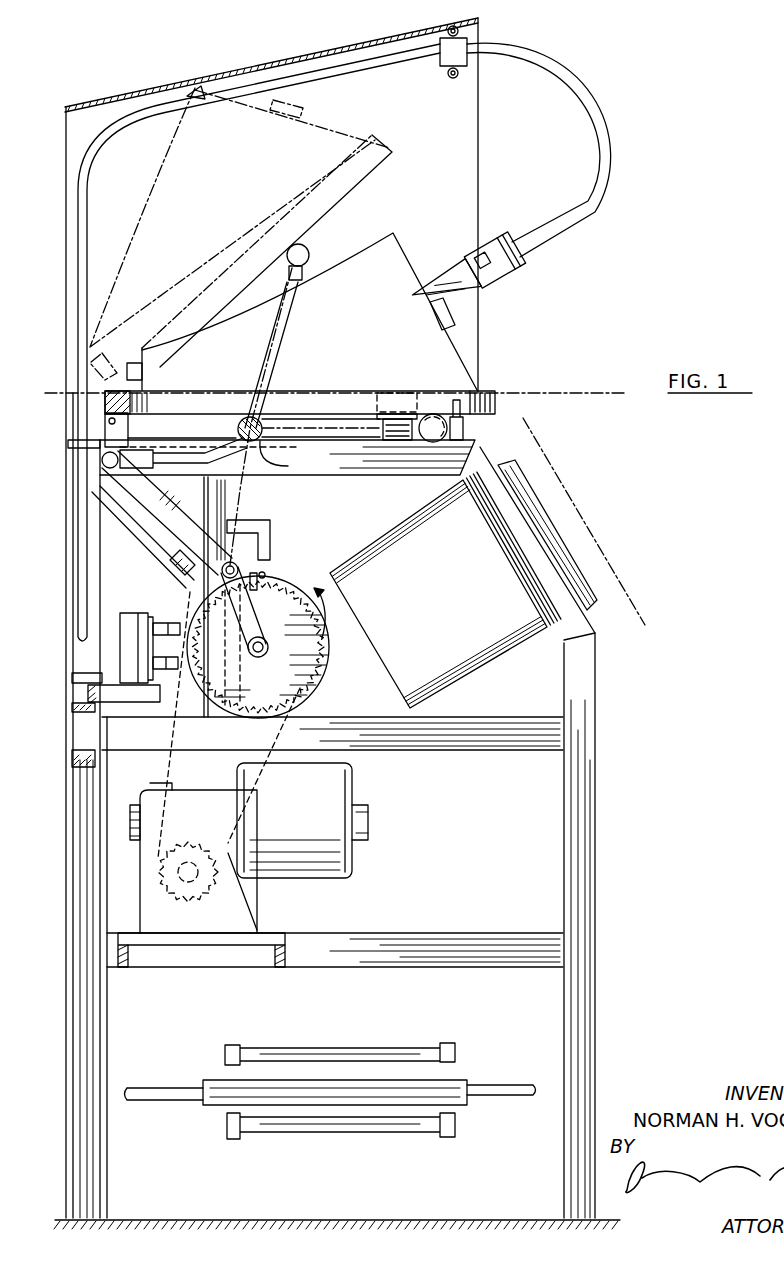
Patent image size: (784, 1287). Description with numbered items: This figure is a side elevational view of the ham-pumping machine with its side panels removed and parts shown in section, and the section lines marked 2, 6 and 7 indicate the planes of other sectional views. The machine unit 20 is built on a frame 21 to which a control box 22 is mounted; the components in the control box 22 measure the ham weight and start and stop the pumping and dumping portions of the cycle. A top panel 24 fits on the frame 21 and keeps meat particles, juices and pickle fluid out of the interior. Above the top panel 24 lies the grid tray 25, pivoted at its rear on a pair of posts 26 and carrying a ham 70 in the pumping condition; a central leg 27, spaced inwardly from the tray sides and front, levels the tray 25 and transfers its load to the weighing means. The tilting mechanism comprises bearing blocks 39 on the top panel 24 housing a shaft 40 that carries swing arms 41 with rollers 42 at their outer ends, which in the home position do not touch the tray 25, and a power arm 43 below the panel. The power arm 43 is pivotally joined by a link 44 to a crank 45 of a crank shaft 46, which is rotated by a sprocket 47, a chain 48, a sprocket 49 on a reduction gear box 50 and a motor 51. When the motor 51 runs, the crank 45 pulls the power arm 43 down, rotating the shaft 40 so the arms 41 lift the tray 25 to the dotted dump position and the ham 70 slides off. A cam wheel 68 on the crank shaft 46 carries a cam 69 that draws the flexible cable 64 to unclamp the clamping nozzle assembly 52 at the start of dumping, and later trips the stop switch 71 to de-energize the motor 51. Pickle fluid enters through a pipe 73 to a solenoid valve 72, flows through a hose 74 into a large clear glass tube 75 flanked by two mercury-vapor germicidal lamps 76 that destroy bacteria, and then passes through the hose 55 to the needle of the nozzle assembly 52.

The section line 2- 2 is at (45, 386).
The section line 6-6 / tilted guide rail 6 is at (527, 425).
The section line 7-7 / slide bar 7 is at (148, 565).
The machine unit 20 is at (603, 878).
The frame 21 is at (593, 722).
The control box 22 is at (462, 598).
The top panel 24 is at (478, 420).
The grid tray 25 is at (492, 390).
The posts 26 is at (118, 432).
The central leg 27 is at (397, 392).
The bearing blocks 39 is at (238, 430).
The shaft 40 is at (288, 456).
The swing arms 41 is at (358, 428).
The rollers 42 is at (435, 434).
The power arm 43 is at (183, 455).
The link 44 is at (187, 527).
The crank 45 is at (253, 612).
The crank shaft 46 is at (268, 648).
The sprocket 47 is at (310, 693).
The chain 48 is at (285, 742).
The sprocket 49 is at (240, 892).
The reduction gear box 50 is at (148, 880).
The motor 51 is at (350, 866).
The automatically releasing clamping nozzle assembly 52 is at (495, 238).
The hose 55 is at (78, 190).
The flexible cable 64 is at (588, 137).
The cam wheel 68 is at (308, 594).
The cam 69 is at (258, 600).
The ham 70 is at (162, 193).
The stop switch 71 is at (265, 548).
The solenoid valve 72 is at (135, 678).
The pipe 73 is at (165, 623).
The hose 74 is at (172, 670).
The glass tube 75 is at (450, 1096).
The mercury-vapor germicidal lamps 76 is at (360, 1052).